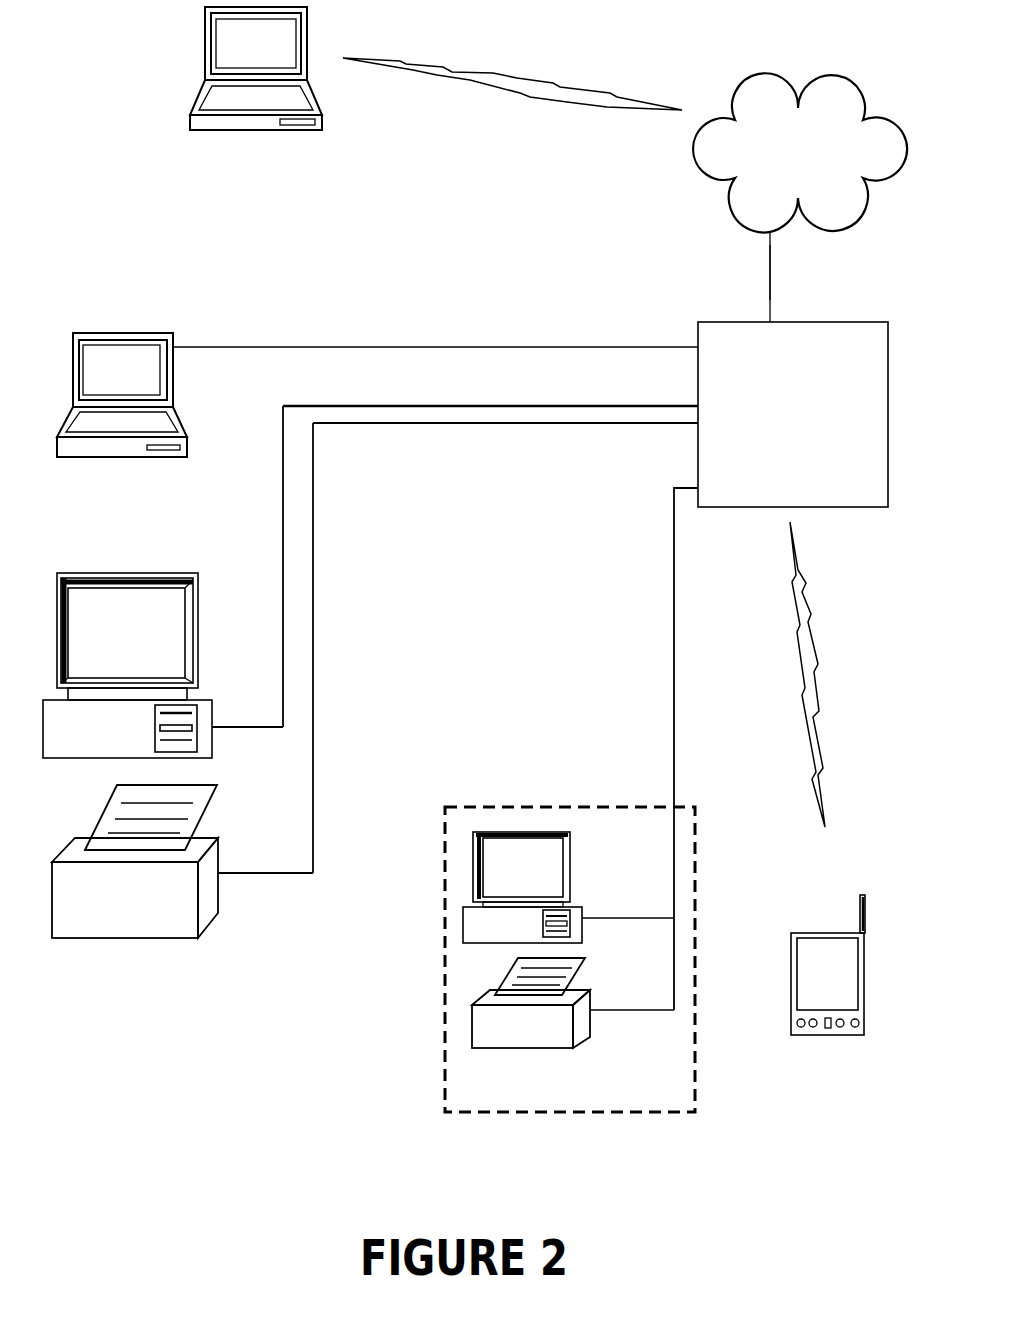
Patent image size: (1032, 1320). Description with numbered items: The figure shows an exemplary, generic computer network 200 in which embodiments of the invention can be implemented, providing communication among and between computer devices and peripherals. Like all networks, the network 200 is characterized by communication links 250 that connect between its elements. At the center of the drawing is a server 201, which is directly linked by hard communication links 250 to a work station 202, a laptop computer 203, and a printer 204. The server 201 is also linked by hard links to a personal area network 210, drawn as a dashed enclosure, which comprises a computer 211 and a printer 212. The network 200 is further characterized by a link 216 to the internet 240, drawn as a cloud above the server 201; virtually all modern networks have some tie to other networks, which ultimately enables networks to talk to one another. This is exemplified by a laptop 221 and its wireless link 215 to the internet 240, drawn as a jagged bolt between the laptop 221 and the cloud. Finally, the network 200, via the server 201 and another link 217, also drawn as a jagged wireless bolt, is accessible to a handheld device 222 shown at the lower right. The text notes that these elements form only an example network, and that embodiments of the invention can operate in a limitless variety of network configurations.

The computer network 200 is at (397, 666).
The server 201 is at (754, 350).
The work station 202 is at (122, 615).
The laptop computer 203 is at (138, 375).
The printer 204 is at (107, 890).
The personal area network 210 is at (682, 1106).
The computer 211 is at (536, 866).
The printer 212 is at (527, 1031).
The wireless link 215 is at (512, 128).
The link 216 is at (671, 272).
The link 217 is at (686, 674).
The laptop 221 is at (271, 47).
The handheld device 222 is at (848, 965).
The internet 240 is at (775, 148).
The communication links 250 is at (647, 347).